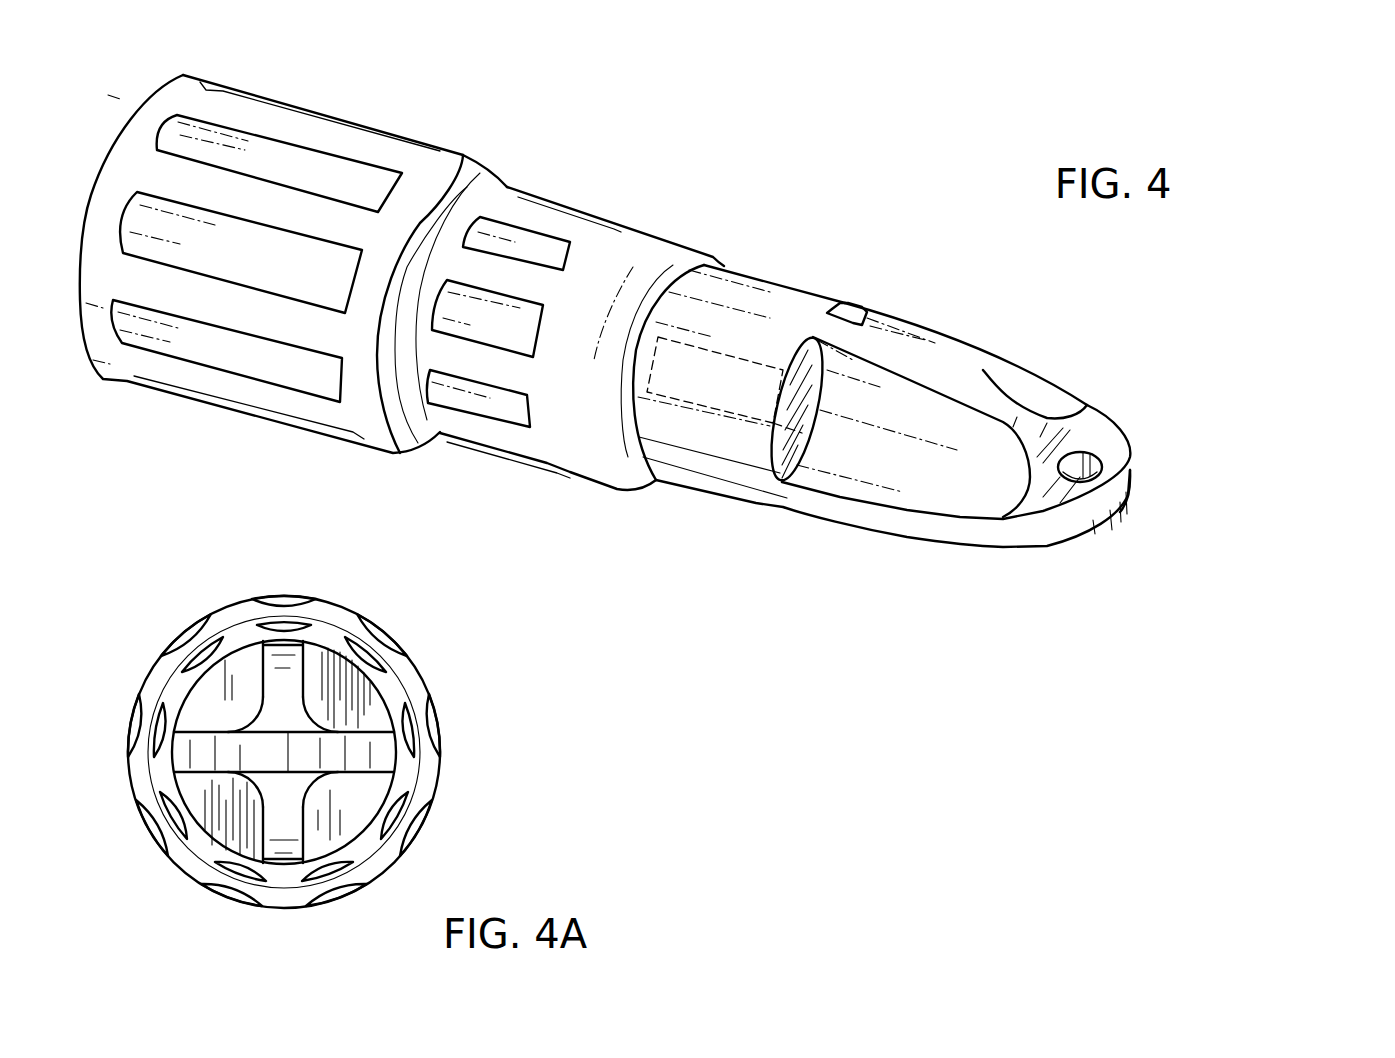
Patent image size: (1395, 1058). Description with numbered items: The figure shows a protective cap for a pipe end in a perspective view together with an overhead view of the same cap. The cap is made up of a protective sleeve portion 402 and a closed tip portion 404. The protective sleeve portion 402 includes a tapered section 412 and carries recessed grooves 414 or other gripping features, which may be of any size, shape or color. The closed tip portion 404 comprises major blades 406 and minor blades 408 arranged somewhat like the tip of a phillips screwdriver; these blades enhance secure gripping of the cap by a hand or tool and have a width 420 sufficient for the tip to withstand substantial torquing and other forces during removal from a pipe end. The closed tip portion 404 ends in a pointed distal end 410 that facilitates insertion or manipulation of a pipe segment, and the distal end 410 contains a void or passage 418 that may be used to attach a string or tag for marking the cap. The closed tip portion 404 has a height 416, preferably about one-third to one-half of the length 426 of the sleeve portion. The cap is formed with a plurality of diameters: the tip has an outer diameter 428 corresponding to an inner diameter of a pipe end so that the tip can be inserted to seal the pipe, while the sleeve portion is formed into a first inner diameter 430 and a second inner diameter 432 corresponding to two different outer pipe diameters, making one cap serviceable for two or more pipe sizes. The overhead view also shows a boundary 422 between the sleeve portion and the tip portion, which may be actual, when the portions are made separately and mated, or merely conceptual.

In FIG. 4, the protective sleeve portion 402 is at (208, 58).
In FIG. 4, the closed tip portion 404 is at (1188, 324).
In FIG. 4, the major blades 406 is at (972, 530).
In FIG. 4A, the major blades 406 is at (340, 753).
In FIG. 4, the minor blades 408 is at (885, 348).
In FIG. 4A, the minor blades 408 is at (282, 667).
In FIG. 4, the distal end 410 is at (1130, 490).
In FIG. 4, the tapered section 412 is at (607, 443).
In FIG. 4A, the tapered section 412 is at (170, 667).
In FIG. 4, the recessed grooves 414 is at (207, 148).
In FIG. 4A, the recessed grooves 414 is at (167, 712).
In FIG. 4, the height 416 is at (1082, 673).
In FIG. 4, the void or passage 418 is at (1085, 450).
In FIG. 4A, the width 420 is at (263, 862).
In FIG. 4A, the boundary 422 is at (360, 840).
In FIG. 4, the length 426 is at (593, 545).
In FIG. 4, the outer diameter 428 is at (1160, 613).
In FIG. 4, the first inner diameter 430 is at (1313, 393).
In FIG. 4, the second inner diameter 432 is at (987, 370).